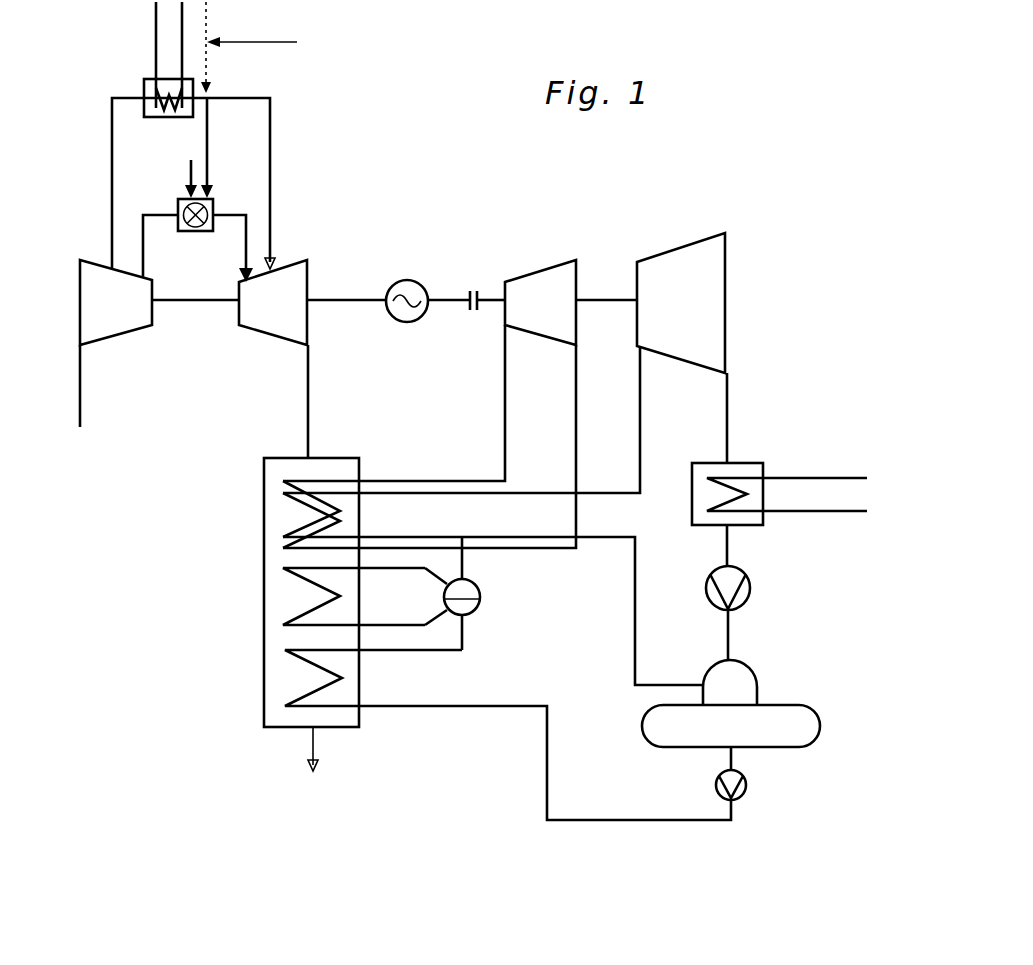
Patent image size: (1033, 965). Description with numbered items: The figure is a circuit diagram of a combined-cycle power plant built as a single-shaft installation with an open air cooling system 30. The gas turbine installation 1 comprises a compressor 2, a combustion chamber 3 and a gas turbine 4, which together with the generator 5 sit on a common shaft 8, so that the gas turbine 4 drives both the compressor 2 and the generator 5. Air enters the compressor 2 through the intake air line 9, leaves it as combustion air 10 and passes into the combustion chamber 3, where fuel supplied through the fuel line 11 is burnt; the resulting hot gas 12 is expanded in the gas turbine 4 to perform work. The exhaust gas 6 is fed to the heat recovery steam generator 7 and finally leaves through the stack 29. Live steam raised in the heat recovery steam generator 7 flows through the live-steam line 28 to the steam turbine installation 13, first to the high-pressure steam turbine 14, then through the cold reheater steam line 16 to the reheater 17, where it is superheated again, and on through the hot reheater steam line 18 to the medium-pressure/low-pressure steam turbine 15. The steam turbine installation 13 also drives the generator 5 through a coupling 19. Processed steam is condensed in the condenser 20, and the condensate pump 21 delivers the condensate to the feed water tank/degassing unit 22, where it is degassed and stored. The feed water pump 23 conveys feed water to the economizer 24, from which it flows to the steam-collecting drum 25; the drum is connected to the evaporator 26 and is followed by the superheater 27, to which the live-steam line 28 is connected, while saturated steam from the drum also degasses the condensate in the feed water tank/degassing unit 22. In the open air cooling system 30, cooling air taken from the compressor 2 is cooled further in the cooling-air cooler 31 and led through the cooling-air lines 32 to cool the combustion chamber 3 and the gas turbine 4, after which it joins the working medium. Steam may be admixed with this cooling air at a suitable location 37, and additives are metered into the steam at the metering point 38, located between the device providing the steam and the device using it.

The gas turbine installation 1 is at (211, 308).
The compressor 2 is at (124, 325).
The combustion chamber 3 is at (193, 232).
The gas turbine 4 is at (297, 325).
The generator 5 is at (407, 279).
The exhaust gas 6 is at (309, 363).
The heat recovery steam generator 7 is at (250, 720).
The common shaft 8 is at (343, 298).
The intake air line 9 is at (80, 357).
The combustion air 10 is at (155, 214).
The fuel line 11 is at (187, 172).
The hot gas 12 is at (232, 214).
The steam turbine installation 13 is at (604, 280).
The high-pressure steam turbine 14 is at (554, 327).
The medium-pressure/low-pressure steam turbine 15 is at (687, 331).
The cold reheater steam line 16 is at (577, 418).
The reheater 17 is at (283, 548).
The hot reheater steam line 18 is at (482, 497).
The coupling 19 is at (472, 290).
The condenser 20 is at (748, 462).
The condensate pump 21 is at (752, 590).
The feed water tank/degassing unit 22 is at (772, 725).
The feed water pump 23 is at (740, 793).
The economizer 24 is at (283, 706).
The steam-collecting drum 25 is at (480, 595).
The evaporator 26 is at (296, 588).
The superheater 27 is at (282, 536).
The live-steam line 28 is at (412, 480).
The stack 29 is at (338, 761).
The open air cooling system 30 is at (93, 98).
The cooling-air cooler 31 is at (146, 80).
The cooling-air lines 32 is at (209, 156).
The location for steam admixture 37 is at (230, 52).
The metering point 38 is at (264, 24).